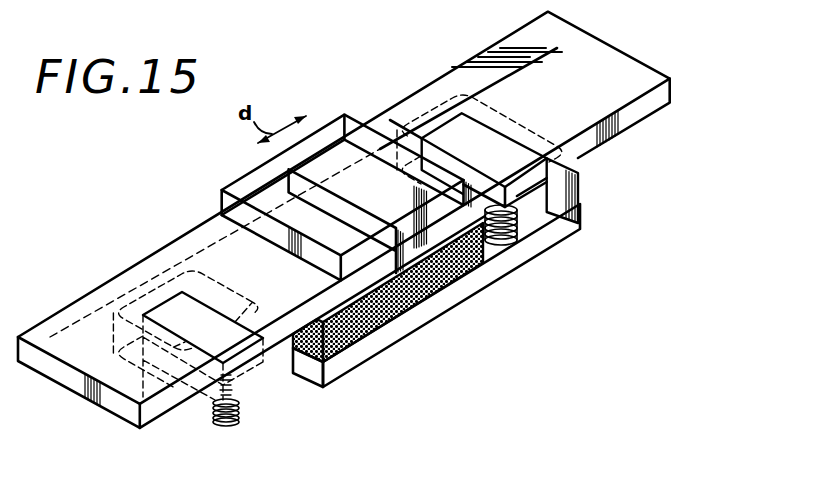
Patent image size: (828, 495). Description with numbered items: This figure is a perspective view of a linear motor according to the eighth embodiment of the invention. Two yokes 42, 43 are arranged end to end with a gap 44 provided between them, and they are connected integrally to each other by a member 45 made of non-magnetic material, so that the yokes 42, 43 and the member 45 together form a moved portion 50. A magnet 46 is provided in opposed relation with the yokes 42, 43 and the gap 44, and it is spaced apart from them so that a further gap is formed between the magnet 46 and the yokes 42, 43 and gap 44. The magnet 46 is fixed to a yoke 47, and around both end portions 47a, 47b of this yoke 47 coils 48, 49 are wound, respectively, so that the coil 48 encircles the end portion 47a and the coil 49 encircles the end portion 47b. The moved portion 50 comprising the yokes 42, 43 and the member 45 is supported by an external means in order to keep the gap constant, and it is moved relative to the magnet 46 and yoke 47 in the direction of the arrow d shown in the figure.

The yoke 42 is at (135, 272).
The yoke 43 is at (622, 62).
The gap 44 is at (398, 228).
The member 45 is at (240, 186).
The magnet 46 is at (455, 295).
The yoke 47 is at (362, 356).
The end portion 47a is at (255, 376).
The end portion 47b is at (540, 208).
The coil 48 is at (200, 408).
The coil 49 is at (565, 224).
The moved portion 50 is at (383, 90).